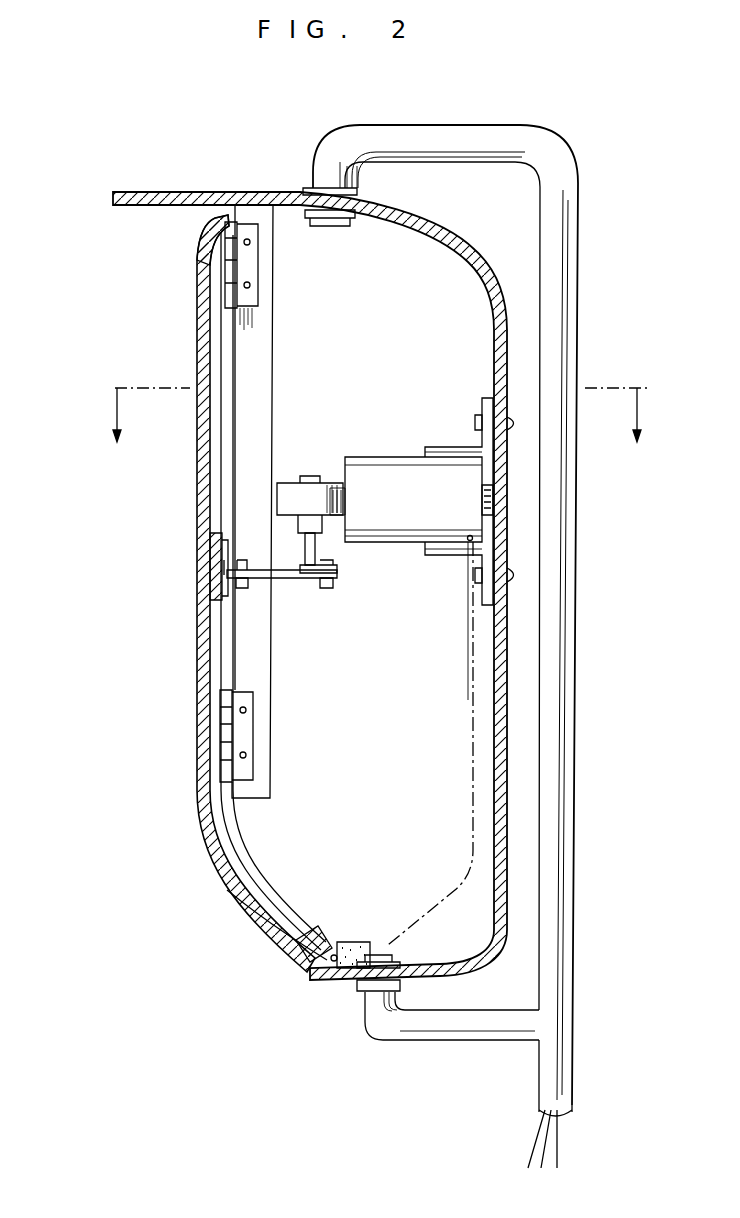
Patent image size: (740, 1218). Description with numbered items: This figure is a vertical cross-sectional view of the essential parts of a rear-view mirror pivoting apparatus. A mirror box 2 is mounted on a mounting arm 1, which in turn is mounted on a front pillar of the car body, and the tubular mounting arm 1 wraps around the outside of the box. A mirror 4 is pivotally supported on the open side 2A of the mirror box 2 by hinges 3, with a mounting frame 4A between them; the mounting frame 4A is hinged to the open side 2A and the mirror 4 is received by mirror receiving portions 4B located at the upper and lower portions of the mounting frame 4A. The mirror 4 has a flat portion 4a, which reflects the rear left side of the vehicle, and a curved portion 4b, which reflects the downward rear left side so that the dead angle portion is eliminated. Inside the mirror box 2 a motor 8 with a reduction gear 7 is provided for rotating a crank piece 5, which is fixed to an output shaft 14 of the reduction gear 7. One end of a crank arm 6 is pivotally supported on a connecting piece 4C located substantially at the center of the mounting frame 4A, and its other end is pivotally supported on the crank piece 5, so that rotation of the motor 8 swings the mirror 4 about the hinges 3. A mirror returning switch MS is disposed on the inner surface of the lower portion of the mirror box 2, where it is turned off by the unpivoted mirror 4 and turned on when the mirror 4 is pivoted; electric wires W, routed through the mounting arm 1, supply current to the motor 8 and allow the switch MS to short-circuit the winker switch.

The mounting arm 1 is at (448, 135).
The mirror box 2 is at (240, 192).
The open side 2A is at (270, 330).
The hinges 3 is at (297, 255).
The mirror 4 is at (197, 478).
The mounting frame 4A is at (233, 376).
The mirror receiving portions 4B is at (192, 228).
The connecting piece 4C is at (216, 568).
The flat portion 4a is at (205, 628).
The curved portion 4b is at (246, 907).
The crank piece 5 is at (330, 565).
The crank arm 6 is at (290, 582).
The reduction gear 7 is at (295, 483).
The motor 8 is at (402, 470).
The output shaft 14 is at (305, 548).
The mirror returning switch MS is at (354, 945).
The electric wires W is at (463, 738).